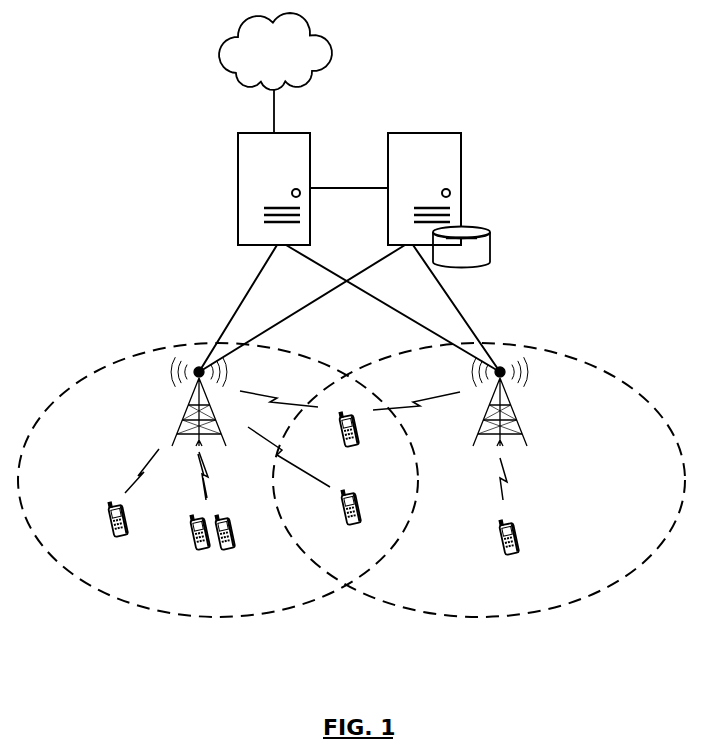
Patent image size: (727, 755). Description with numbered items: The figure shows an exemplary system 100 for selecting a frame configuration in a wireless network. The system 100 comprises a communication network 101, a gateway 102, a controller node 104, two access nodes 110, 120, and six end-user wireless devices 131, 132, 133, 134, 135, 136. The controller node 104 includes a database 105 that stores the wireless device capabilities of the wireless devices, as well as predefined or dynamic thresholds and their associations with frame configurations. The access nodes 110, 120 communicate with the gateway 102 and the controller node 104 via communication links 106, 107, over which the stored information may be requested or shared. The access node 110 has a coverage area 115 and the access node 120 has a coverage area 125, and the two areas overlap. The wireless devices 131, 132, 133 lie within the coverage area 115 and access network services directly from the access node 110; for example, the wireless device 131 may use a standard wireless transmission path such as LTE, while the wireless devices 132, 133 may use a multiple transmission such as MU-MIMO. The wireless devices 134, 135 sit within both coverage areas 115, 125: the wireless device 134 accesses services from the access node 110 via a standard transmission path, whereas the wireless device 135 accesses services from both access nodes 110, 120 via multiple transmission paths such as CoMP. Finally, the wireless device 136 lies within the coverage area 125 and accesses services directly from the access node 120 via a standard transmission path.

The system 100 is at (428, 70).
The communication network 101 is at (291, 63).
The gateway 102 is at (238, 161).
The controller node 104 is at (461, 176).
The database 105 is at (490, 247).
The communication link 106 is at (331, 272).
The communication link 107 is at (300, 310).
The access node 110 is at (181, 425).
The coverage area 115 is at (136, 353).
The access node 120 is at (520, 428).
The coverage area 125 is at (569, 352).
The wireless device 131 is at (116, 540).
The wireless device 132 is at (199, 554).
The wireless device 133 is at (228, 554).
The wireless device 134 is at (349, 528).
The wireless device 135 is at (349, 449).
The wireless device 136 is at (507, 556).